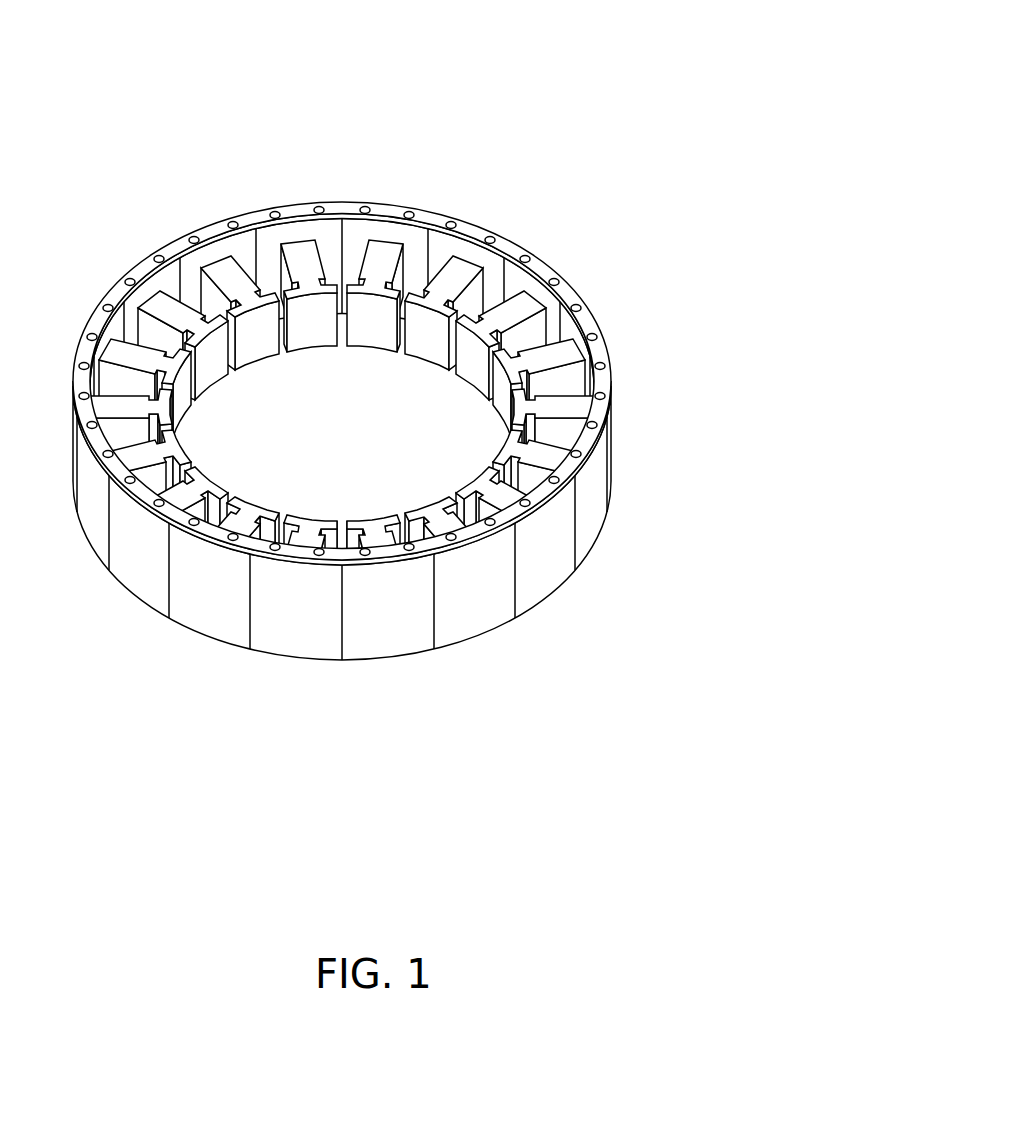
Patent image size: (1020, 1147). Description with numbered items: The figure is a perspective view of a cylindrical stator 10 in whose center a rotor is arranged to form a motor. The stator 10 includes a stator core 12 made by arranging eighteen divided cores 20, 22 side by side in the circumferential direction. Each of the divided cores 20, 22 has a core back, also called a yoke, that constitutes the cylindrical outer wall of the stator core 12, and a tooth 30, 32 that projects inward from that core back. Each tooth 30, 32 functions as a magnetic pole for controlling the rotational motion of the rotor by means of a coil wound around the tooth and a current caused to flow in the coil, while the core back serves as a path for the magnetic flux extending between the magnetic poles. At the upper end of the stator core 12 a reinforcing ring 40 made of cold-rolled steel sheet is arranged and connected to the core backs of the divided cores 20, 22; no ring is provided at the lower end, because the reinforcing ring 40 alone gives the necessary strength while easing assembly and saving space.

The stator 10 is at (463, 401).
The stator core 12 is at (488, 479).
The divided core 20 is at (357, 573).
The divided core 22 is at (402, 633).
The tooth 30 is at (447, 523).
The tooth 32 is at (380, 538).
The reinforcing ring 40 is at (300, 567).